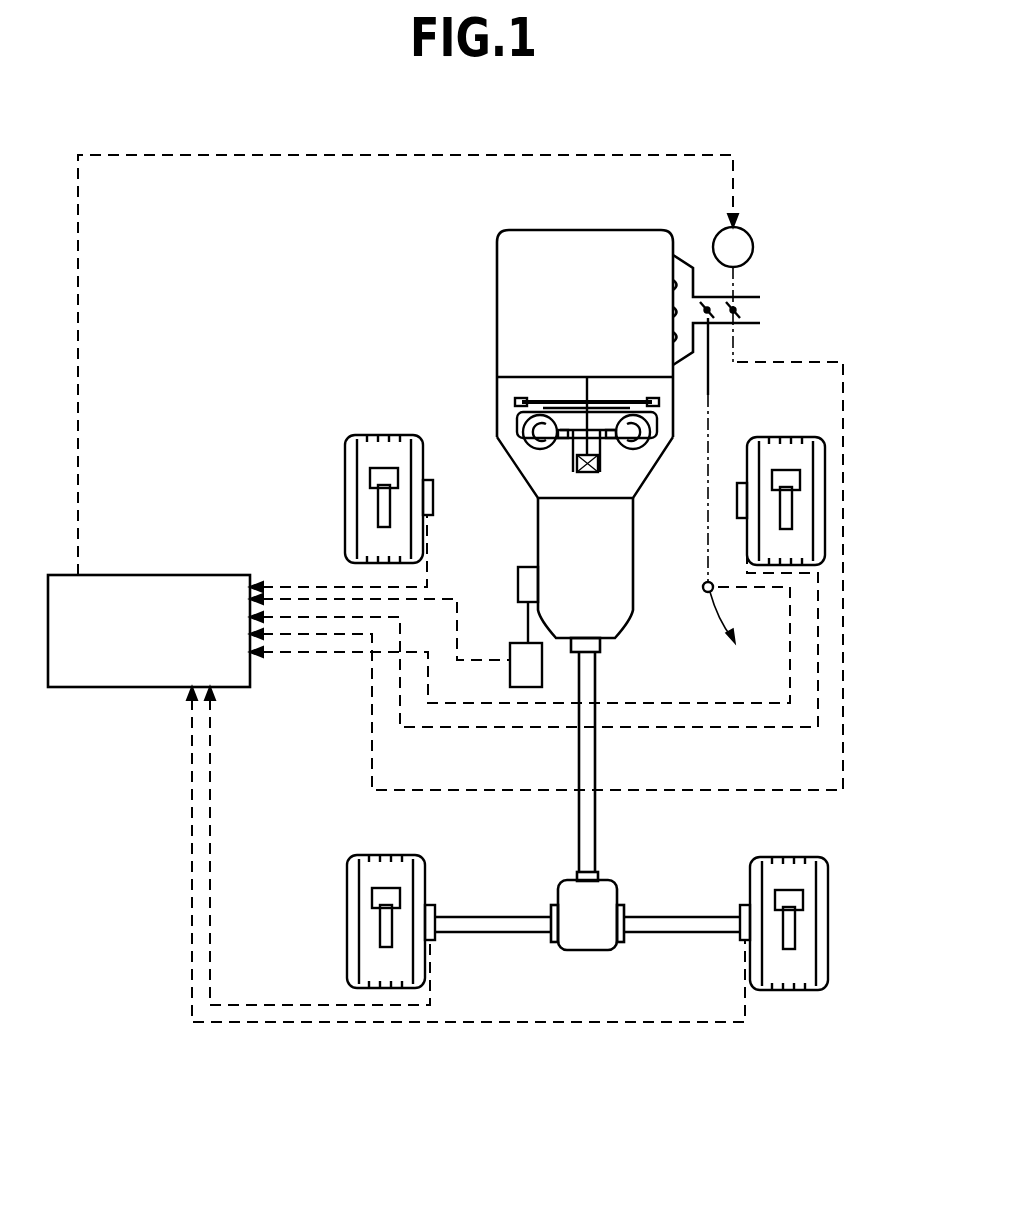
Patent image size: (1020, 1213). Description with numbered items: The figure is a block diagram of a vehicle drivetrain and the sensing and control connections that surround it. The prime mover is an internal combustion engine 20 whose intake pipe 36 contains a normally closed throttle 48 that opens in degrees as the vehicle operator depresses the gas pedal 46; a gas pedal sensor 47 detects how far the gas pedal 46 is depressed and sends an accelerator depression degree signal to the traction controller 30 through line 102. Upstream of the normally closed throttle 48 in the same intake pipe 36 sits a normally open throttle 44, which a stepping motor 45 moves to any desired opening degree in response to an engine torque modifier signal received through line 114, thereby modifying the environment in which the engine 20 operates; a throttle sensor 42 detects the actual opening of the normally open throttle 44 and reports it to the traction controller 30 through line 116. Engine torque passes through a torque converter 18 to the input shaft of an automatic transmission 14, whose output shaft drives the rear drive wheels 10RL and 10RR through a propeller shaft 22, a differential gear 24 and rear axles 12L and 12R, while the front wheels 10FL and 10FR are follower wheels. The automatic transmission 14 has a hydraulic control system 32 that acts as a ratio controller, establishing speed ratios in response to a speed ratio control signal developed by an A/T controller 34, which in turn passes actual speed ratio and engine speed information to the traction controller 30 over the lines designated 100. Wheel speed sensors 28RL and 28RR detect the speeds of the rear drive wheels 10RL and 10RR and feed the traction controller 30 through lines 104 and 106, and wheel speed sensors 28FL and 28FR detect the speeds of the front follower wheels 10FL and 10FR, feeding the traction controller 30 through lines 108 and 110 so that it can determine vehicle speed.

The front left follower wheel 10FL is at (345, 480).
The front right follower wheel 10FR is at (825, 490).
The rear left drive wheel 10RL is at (349, 897).
The rear right drive wheel 10RR is at (826, 986).
The rear axle 12L is at (496, 917).
The rear axle 12R is at (690, 917).
The automatic transmission 14 is at (633, 622).
The torque converter 18 is at (497, 413).
The internal combustion engine 20 is at (497, 290).
The propeller shaft 22 is at (597, 686).
The differential gear 24 is at (615, 885).
The wheel speed sensor 28FL is at (433, 508).
The wheel speed sensor 28FR is at (747, 508).
The wheel speed sensor 28RL is at (435, 938).
The wheel speed sensor 28RR is at (740, 942).
The traction controller 30 is at (152, 575).
The hydraulic control system 32 is at (518, 622).
The A/T controller 34 is at (510, 684).
The intake pipe 36 is at (752, 297).
The throttle sensor 42 is at (742, 309).
The normally open throttle 44 is at (740, 336).
The stepping motor 45 is at (752, 240).
The gas pedal 46 is at (741, 635).
The gas pedal sensor 47 is at (704, 584).
The normally closed throttle 48 is at (714, 318).
The lines 100 is at (444, 598).
The line 102 is at (708, 700).
The line 104 is at (262, 1004).
The line 106 is at (575, 1020).
The line 108 is at (300, 583).
The line 110 is at (478, 728).
The line 114 is at (637, 155).
The line 116 is at (846, 708).